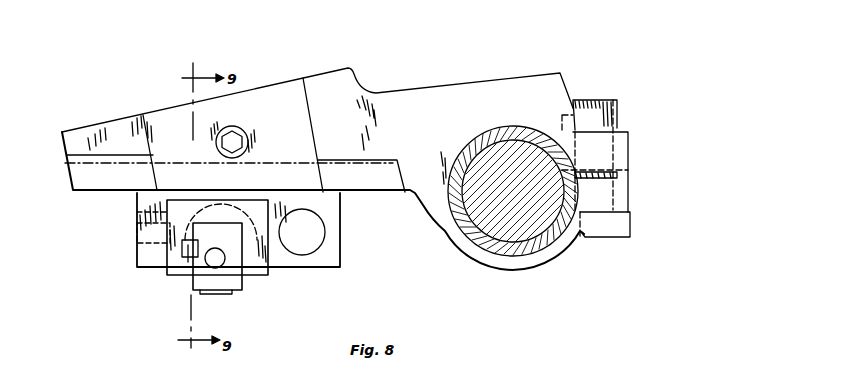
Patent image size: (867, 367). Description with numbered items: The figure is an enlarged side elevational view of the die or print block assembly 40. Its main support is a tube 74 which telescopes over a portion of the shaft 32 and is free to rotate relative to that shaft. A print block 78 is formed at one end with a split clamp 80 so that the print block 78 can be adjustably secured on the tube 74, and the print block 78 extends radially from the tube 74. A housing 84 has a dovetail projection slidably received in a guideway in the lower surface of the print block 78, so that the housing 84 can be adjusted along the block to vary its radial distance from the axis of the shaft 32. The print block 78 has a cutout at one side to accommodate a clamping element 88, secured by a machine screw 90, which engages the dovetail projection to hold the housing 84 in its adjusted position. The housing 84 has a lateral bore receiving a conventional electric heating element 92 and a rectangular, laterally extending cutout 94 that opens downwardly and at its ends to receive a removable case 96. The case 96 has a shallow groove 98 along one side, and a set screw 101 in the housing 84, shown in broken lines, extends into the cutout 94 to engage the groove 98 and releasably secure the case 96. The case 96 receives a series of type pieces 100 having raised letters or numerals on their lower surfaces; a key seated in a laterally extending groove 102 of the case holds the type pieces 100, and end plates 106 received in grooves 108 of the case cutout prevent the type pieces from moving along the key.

The die or print block assembly 40 is at (410, 50).
The clamping element 88 is at (268, 88).
The machine screw 90 is at (247, 139).
The print block 78 is at (423, 92).
The split clamp 80 is at (560, 88).
The tube 74 is at (522, 247).
The shaft 32 is at (507, 230).
The housing 84 is at (333, 242).
The electric heating element 92 is at (318, 229).
The cutout 94 is at (267, 272).
The case 96 is at (173, 267).
The type pieces 100 is at (228, 267).
The end plates 106 is at (216, 268).
The groove 98 is at (172, 242).
The groove 102 is at (190, 262).
The set screw 101 is at (138, 240).
The grooves 108 is at (137, 212).